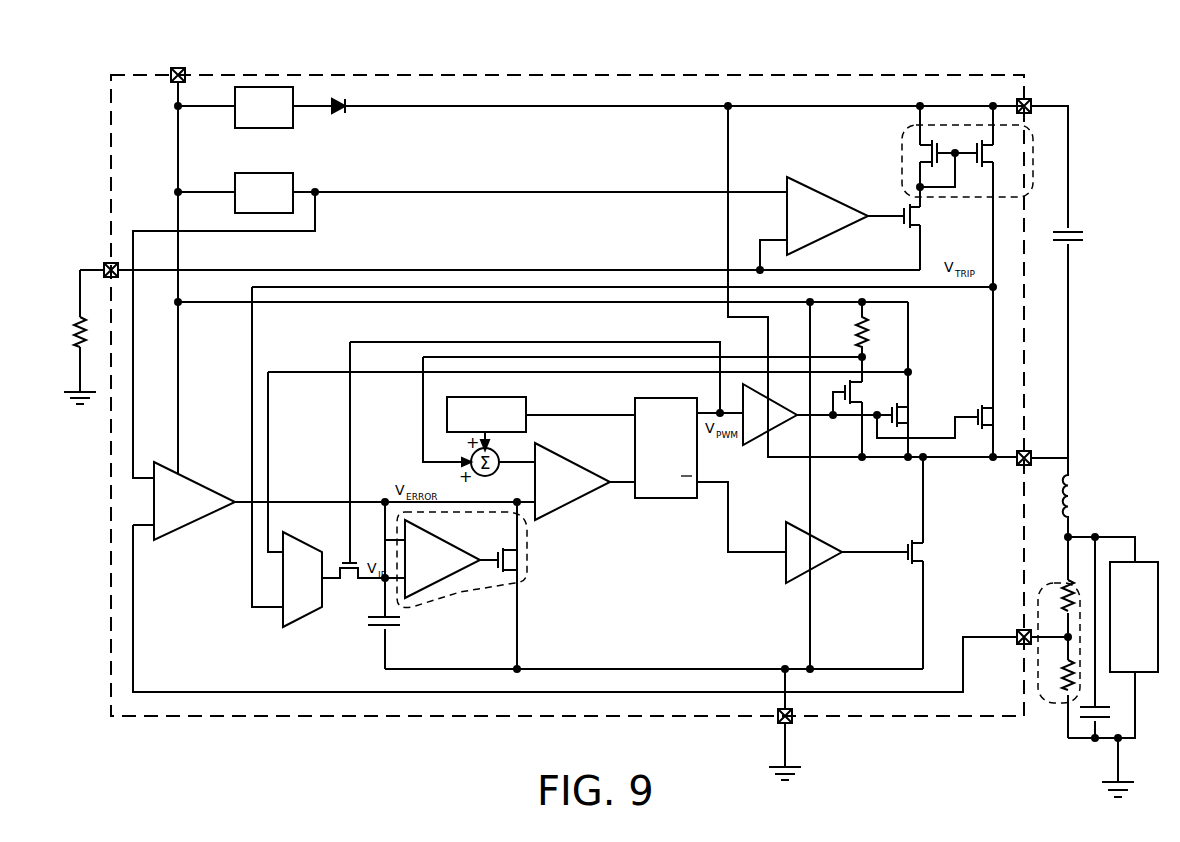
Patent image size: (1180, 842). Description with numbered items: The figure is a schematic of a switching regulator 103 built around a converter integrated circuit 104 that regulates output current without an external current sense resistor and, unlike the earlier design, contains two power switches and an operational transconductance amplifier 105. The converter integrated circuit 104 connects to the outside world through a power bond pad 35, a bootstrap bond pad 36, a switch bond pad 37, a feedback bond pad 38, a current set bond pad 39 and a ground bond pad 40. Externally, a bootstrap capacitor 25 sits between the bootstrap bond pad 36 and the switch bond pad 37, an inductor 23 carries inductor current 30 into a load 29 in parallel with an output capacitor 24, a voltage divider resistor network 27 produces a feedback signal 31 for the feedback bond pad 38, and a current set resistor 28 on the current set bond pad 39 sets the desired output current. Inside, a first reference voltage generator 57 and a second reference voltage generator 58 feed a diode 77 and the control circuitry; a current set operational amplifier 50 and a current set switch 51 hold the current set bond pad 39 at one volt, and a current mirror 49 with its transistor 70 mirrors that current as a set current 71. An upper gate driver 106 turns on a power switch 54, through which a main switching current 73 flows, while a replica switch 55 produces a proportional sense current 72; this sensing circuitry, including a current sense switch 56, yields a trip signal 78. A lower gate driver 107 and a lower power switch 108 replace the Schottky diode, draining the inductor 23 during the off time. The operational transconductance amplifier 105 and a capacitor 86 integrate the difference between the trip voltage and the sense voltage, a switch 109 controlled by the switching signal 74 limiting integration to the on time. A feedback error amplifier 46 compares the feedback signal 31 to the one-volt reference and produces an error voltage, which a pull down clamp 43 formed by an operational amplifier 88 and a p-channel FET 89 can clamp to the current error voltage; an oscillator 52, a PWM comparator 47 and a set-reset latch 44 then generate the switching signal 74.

The switching regulator 103 is at (1091, 54).
The converter integrated circuit 104 is at (797, 75).
The power (VDD) bond pad 35 is at (186, 75).
The first reference voltage generator 57 is at (278, 128).
The second reference voltage generator 58 is at (244, 173).
The diode D1 77 is at (337, 106).
The current set (ISET) bond pad 39 is at (104, 269).
The current set resistor 28 is at (70, 331).
The PWM switching signal 74 is at (395, 334).
The trip signal 78 is at (245, 396).
The feedback error amplifier 46 is at (192, 530).
The feedback signal 31 is at (212, 686).
The operational transconductance amplifier 105 is at (302, 579).
The switch 109 is at (352, 580).
The capacitor 86 is at (400, 624).
The pull down clamp 43 is at (456, 587).
The operational amplifier 88 is at (438, 538).
The p-channel FET 89 is at (497, 548).
The oscillator 52 is at (526, 405).
The PWM comparator 47 is at (573, 466).
The set-reset (SR) latch 44 is at (666, 448).
The upper gate driver 106 is at (749, 448).
The current sense switch 56 is at (860, 392).
The power switch 54 is at (910, 418).
The main switching current 73 is at (917, 421).
The replica switch 55 is at (986, 413).
The sense current 72 is at (1004, 441).
The lower gate driver 107 is at (822, 538).
The lower power switch 108 is at (911, 541).
The ground (GND) bond pad 40 is at (786, 725).
The current set operational amplifier 50 is at (824, 196).
The current set switch 51 is at (923, 217).
The current mirror 49 is at (919, 151).
The transistor 70 is at (986, 153).
The set current 71 is at (1005, 186).
The bootstrap (BST) bond pad 36 is at (1035, 104).
The bootstrap capacitor 25 is at (1084, 238).
The switch (SW) bond pad 37 is at (1016, 463).
The inductor 23 is at (1074, 492).
The inductor current 30 is at (1050, 497).
The voltage divider resistor network 27 is at (1055, 582).
The load 29 is at (1134, 617).
The output capacitor 24 is at (1102, 707).
The feedback (FB) bond pad 38 is at (1015, 644).